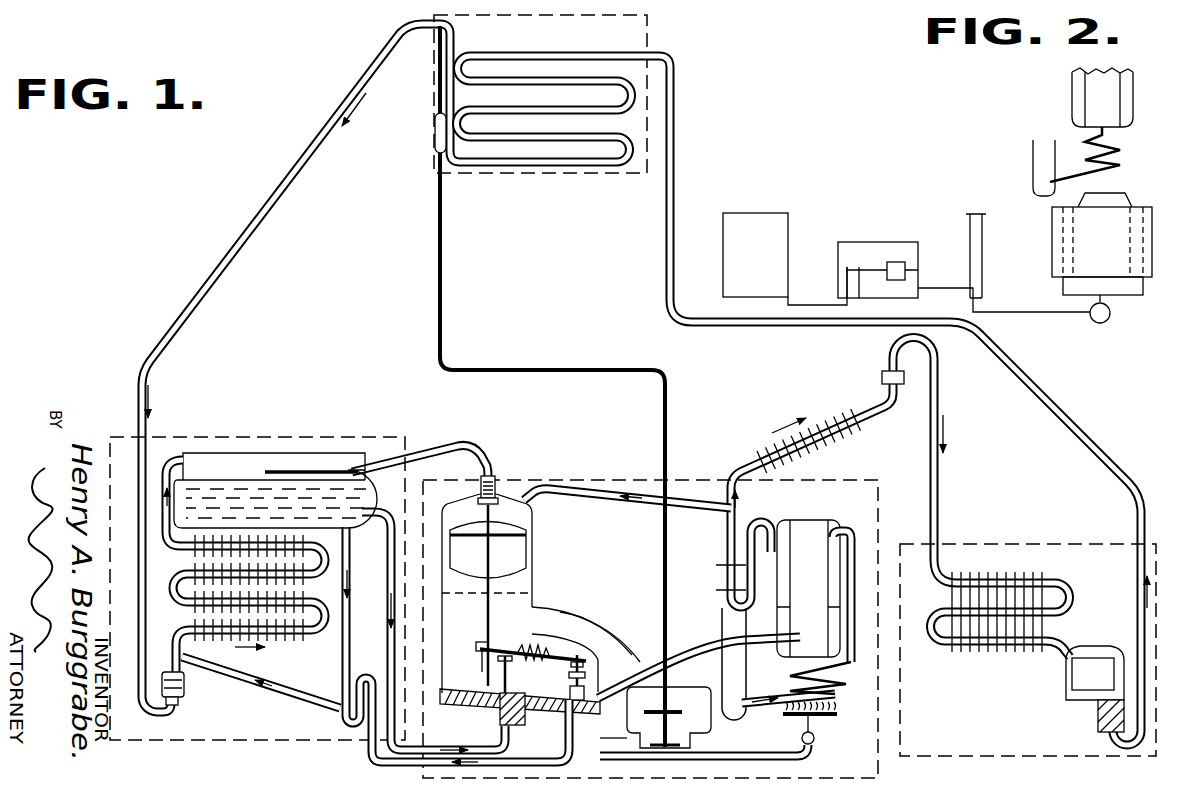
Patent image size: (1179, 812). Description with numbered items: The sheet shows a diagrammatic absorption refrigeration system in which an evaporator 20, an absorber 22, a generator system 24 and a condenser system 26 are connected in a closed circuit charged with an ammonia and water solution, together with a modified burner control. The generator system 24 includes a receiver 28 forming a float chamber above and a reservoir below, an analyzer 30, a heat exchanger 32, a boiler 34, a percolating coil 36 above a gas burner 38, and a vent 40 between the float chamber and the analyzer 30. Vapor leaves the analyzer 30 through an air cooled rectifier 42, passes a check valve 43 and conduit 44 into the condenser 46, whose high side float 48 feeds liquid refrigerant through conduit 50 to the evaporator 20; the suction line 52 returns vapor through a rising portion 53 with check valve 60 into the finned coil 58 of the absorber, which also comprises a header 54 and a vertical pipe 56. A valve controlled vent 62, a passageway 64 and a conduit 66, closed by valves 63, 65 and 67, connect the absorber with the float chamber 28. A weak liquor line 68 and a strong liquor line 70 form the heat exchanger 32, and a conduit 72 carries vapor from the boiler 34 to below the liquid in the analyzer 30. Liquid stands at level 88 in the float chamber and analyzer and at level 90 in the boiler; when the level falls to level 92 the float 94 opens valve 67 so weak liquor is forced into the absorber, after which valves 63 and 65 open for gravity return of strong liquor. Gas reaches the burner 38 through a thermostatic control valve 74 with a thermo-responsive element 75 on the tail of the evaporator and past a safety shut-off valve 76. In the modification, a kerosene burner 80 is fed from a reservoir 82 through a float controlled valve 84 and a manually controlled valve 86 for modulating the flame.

In FIG. 1, the evaporator 20 is at (572, 174).
In FIG. 1, the absorber 22 is at (242, 662).
In FIG. 1, the generator system 24 is at (579, 609).
In FIG. 1, the condenser system 26 is at (1028, 650).
In FIG. 1, the receiver 28 is at (536, 580).
In FIG. 1, the analyzer 30 is at (716, 564).
In FIG. 1, the heat exchanger 32 is at (657, 658).
In FIG. 1, the boiler 34 is at (831, 527).
In FIG. 2, the boiler 34 is at (1133, 102).
In FIG. 1, the percolating coil 36 is at (838, 682).
In FIG. 2, the percolating coil 36 is at (1122, 148).
In FIG. 1, the gas burner 38 is at (828, 722).
In FIG. 1, the vent 40 is at (578, 477).
In FIG. 1, the rectifier 42 is at (820, 445).
In FIG. 1, the check valve 43 is at (880, 380).
In FIG. 1, the check valve controlled conduit 44 is at (940, 393).
In FIG. 1, the condenser 46 is at (1026, 580).
In FIG. 1, the high side float 48 is at (1090, 650).
In FIG. 1, the liquid refrigerant conduit 50 is at (1082, 432).
In FIG. 2, the liquid refrigerant conduit 50 is at (1033, 166).
In FIG. 1, the suction line 52 is at (237, 249).
In FIG. 1, the upwardly rising portion 53 is at (173, 706).
In FIG. 1, the header 54 is at (283, 456).
In FIG. 1, the vertically arranged pipe 56 is at (353, 600).
In FIG. 1, the finned coil 58 is at (318, 640).
In FIG. 1, the check valve 60 is at (166, 677).
In FIG. 1, the valve controlled vent 62 is at (462, 446).
In FIG. 1, the valve 63 is at (496, 477).
In FIG. 1, the valve controlled passageway 64 is at (387, 667).
In FIG. 1, the valve 65 is at (500, 712).
In FIG. 1, the valve controlled conduit 66 is at (370, 760).
In FIG. 1, the valve 67 is at (568, 716).
In FIG. 1, the weak liquor line 68 is at (694, 652).
In FIG. 1, the strong liquor line 70 is at (636, 655).
In FIG. 1, the conduit 72 is at (757, 525).
In FIG. 1, the thermostatic control valve 74 is at (656, 752).
In FIG. 1, the thermo-responsive element 75 is at (437, 131).
In FIG. 1, the safety shut-off valve 76 is at (818, 750).
In FIG. 1, the kerosene burner 80 is at (1052, 226).
In FIG. 1, the reservoir 82 is at (768, 217).
In FIG. 1, the float controlled valve 84 is at (900, 245).
In FIG. 1, the manually controlled valve 86 is at (985, 245).
In FIG. 1, the liquid level 88 is at (538, 524).
In FIG. 1, the liquid level 90 is at (838, 603).
In FIG. 1, the liquid level 92 is at (532, 594).
In FIG. 1, the float 94 is at (518, 552).